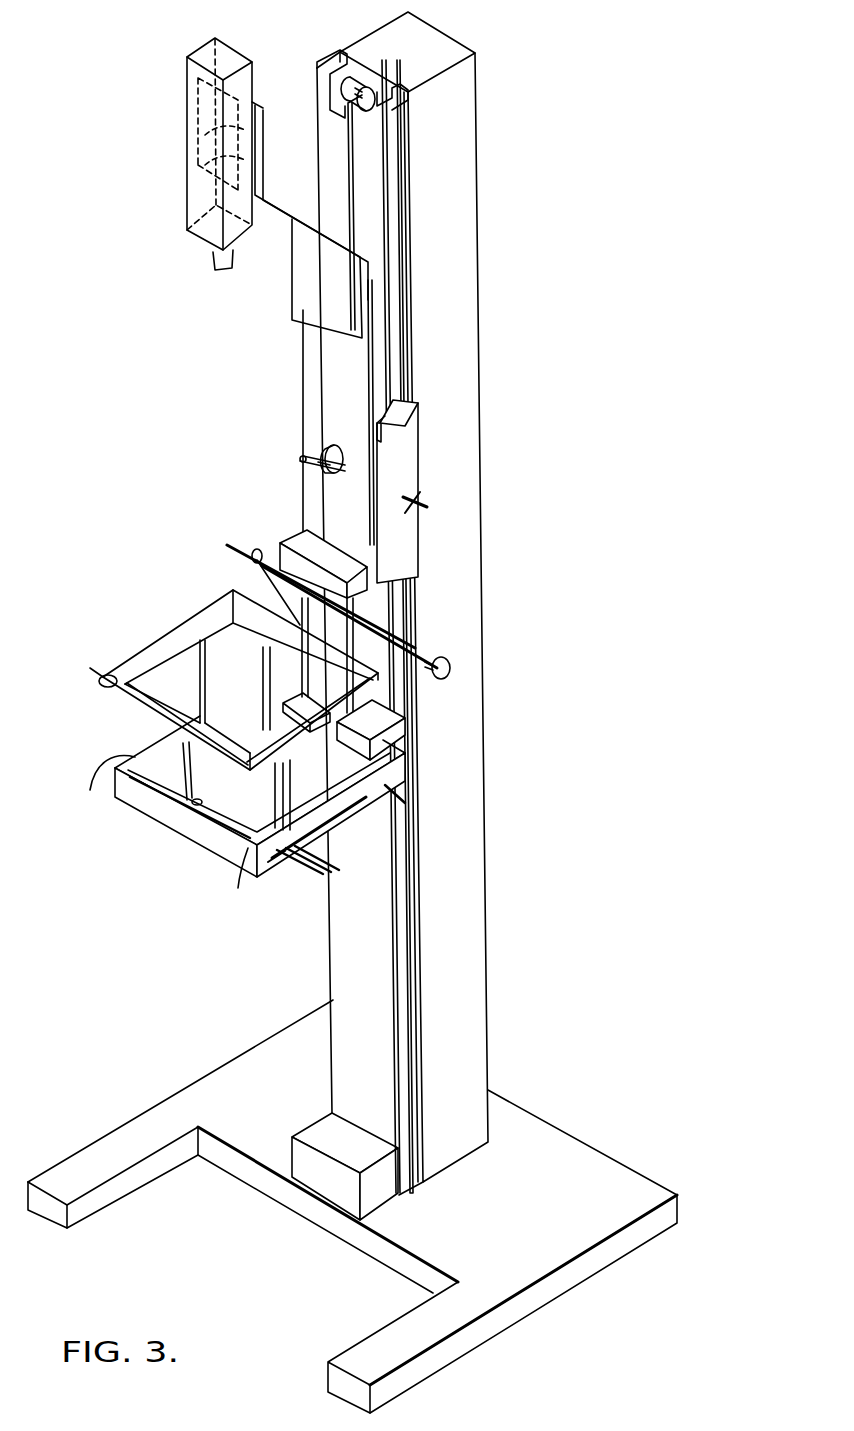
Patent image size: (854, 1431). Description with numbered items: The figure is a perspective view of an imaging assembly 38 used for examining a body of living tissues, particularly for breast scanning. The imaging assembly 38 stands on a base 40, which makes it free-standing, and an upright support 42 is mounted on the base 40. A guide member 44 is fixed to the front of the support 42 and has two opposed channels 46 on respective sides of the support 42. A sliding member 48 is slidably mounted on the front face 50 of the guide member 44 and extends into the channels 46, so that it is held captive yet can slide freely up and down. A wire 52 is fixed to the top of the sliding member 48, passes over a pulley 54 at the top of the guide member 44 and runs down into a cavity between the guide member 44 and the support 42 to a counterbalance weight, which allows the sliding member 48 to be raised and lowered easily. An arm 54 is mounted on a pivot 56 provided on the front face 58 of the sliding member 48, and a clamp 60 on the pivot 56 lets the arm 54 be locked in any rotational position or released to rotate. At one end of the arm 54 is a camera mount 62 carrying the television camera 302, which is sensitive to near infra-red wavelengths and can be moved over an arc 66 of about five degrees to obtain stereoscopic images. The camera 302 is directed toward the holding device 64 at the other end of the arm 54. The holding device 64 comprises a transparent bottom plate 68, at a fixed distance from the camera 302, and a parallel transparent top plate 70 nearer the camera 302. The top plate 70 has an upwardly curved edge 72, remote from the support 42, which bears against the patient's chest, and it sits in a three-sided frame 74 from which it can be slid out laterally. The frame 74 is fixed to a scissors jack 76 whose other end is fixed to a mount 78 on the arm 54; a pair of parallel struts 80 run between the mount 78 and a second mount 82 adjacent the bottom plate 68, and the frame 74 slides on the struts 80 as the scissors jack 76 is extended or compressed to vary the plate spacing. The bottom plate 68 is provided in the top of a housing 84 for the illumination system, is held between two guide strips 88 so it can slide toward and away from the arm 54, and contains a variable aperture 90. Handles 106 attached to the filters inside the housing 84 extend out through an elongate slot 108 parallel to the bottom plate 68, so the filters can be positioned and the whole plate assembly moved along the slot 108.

The imaging assembly 38 is at (518, 503).
The base 40 is at (605, 1170).
The upright support 42 is at (468, 972).
The guide member 44 is at (350, 1083).
The opposed channels 46 is at (334, 63).
The sliding member 48 is at (410, 530).
The front face of guide member 50 is at (345, 958).
The wire 52 is at (350, 122).
The pulley / arm 54 is at (346, 93).
The pivot 56 is at (328, 443).
The front face of sliding member 58 is at (381, 440).
The clamp 60 is at (313, 455).
The camera mount 62 is at (283, 215).
The holding device 64 is at (92, 735).
The arc 66 is at (236, 140).
The bottom plate 68 is at (175, 783).
The top plate 70 is at (174, 674).
The upwardly curved edge 72 is at (118, 682).
The 3-sided frame 74 is at (186, 641).
The scissors jack 76 is at (385, 612).
The mount 78 is at (312, 543).
The parallel struts 80 is at (258, 612).
The second mount 82 is at (395, 758).
The housing 84 is at (392, 787).
The guide strips 88 is at (158, 836).
The variable aperture 90 is at (188, 808).
The handles 106 is at (305, 868).
The elongate slot 108 is at (336, 822).
The television camera 302 is at (180, 75).